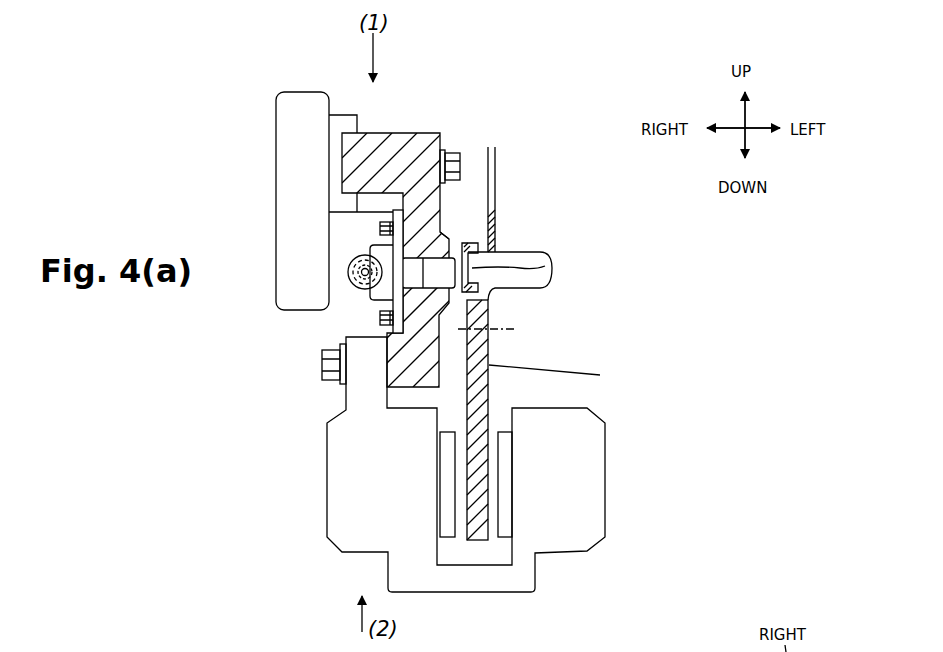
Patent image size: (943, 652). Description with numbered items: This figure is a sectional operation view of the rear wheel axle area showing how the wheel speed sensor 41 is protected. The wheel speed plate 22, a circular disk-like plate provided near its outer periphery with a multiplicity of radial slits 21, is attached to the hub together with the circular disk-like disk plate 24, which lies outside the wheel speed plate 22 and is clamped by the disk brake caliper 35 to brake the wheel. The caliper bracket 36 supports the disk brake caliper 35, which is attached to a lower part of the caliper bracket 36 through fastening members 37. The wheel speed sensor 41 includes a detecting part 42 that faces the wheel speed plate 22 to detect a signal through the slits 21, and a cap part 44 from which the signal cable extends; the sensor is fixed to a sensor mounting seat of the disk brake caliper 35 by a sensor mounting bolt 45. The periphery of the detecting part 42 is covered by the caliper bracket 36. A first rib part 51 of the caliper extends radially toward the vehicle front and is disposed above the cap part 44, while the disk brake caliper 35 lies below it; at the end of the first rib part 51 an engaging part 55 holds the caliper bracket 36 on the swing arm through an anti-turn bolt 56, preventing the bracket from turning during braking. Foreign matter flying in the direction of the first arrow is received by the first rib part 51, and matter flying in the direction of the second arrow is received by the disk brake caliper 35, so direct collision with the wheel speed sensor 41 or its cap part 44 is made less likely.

The radial slits 21 is at (552, 266).
The wheel speed plate 22 is at (496, 220).
The disk plate 24 is at (478, 530).
The disk brake caliper 35 is at (330, 550).
The caliper bracket 36 is at (387, 203).
The fastening members 37 is at (324, 366).
The wheel speed sensor 41 is at (346, 275).
The detecting part 42 is at (464, 241).
The cap part 44 is at (362, 290).
The sensor mounting bolt 45 is at (380, 228).
The first rib part 51 is at (373, 153).
The engaging part 55 is at (442, 150).
The anti-turn bolt 56 is at (447, 236).